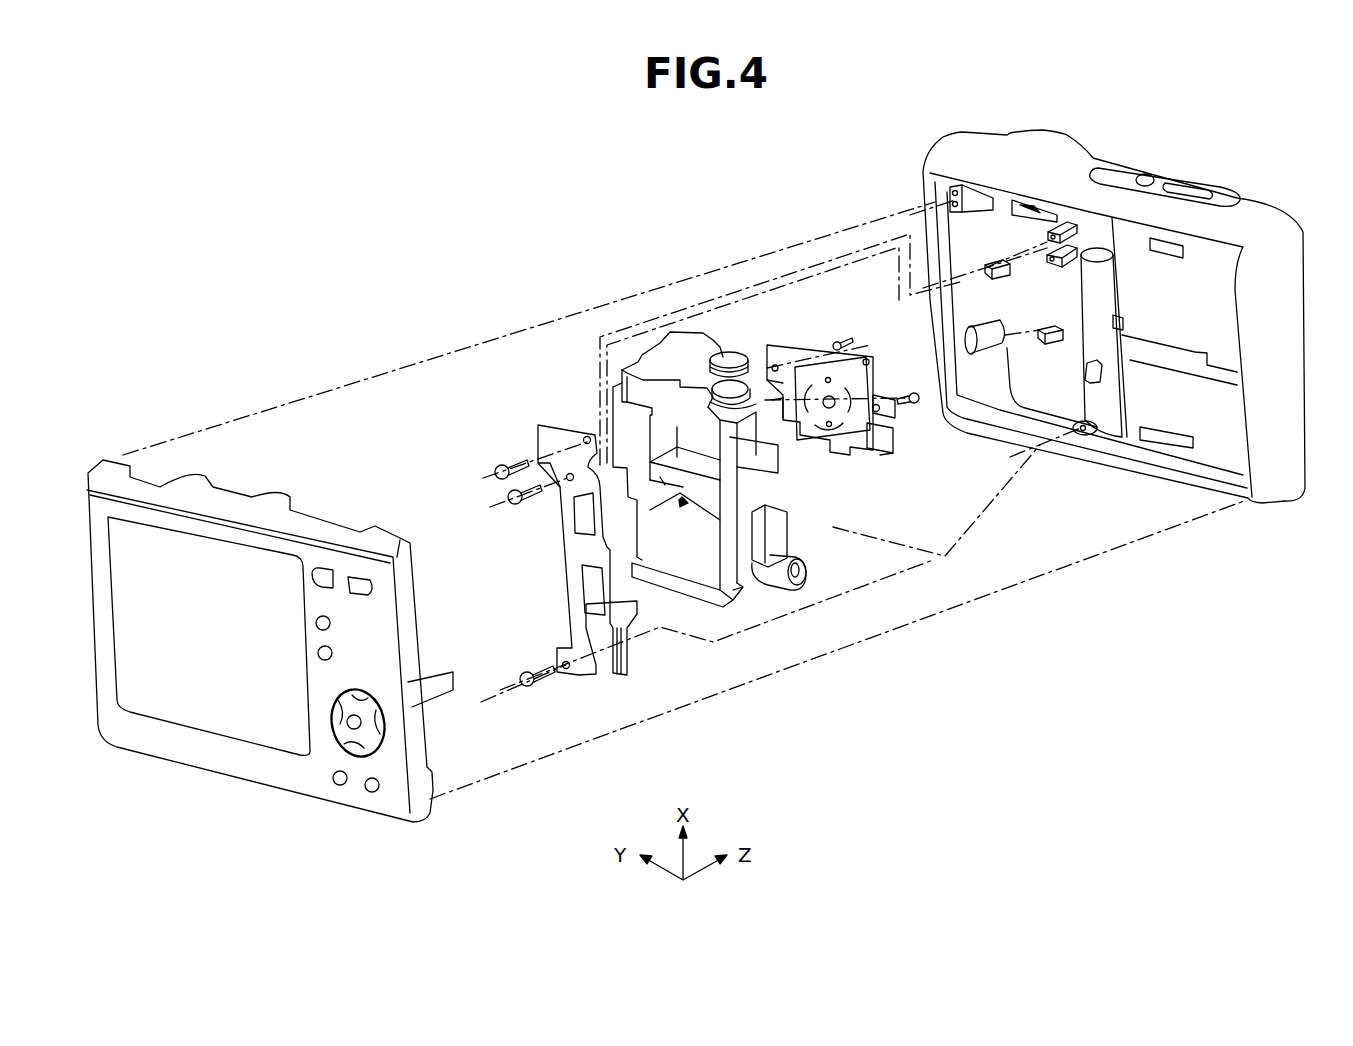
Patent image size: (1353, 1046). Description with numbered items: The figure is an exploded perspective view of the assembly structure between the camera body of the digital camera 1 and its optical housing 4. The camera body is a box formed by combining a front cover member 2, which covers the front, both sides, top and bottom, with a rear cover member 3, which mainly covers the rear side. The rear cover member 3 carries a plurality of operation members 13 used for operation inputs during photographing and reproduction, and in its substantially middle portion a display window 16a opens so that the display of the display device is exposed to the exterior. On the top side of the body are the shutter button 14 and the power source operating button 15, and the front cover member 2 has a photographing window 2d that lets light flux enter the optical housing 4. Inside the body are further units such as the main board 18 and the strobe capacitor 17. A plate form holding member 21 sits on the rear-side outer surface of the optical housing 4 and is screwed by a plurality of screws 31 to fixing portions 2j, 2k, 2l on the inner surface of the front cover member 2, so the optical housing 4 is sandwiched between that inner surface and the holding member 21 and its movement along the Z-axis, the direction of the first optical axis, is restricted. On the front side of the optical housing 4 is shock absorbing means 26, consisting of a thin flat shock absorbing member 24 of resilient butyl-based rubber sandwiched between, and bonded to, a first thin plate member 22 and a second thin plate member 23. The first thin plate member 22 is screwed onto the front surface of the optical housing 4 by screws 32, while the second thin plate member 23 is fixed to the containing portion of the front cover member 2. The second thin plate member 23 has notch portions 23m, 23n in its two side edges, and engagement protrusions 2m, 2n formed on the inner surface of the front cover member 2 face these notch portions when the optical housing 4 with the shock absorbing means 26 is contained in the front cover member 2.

The digital camera 1 is at (418, 287).
The front cover member 2 is at (953, 153).
The photographing window 2d is at (948, 185).
The fixing portion 2j is at (1060, 215).
The fixing portion 2k is at (1078, 240).
The fixing portion 2l is at (1083, 433).
The engagement protrusion 2m is at (1000, 275).
The engagement protrusion 2n is at (1052, 343).
The rear cover member 3 is at (108, 462).
The optical housing 4 is at (668, 537).
The operation members 13 is at (362, 577).
The shutter button 14 is at (1198, 187).
The power source operating button 15 is at (1150, 178).
The display window 16a is at (160, 702).
The strobe capacitor 17 is at (1105, 347).
The main board 18 is at (1175, 400).
The plate form holding member 21 is at (557, 438).
The first thin plate member 22 is at (783, 353).
The second thin plate member 23 is at (887, 447).
The notch portion 23m is at (783, 403).
The notch portion 23n is at (926, 460).
The shock absorbing member 24 is at (843, 435).
The shock absorbing means 26 is at (820, 332).
The screws 31 is at (497, 468).
The screws 32 is at (913, 392).